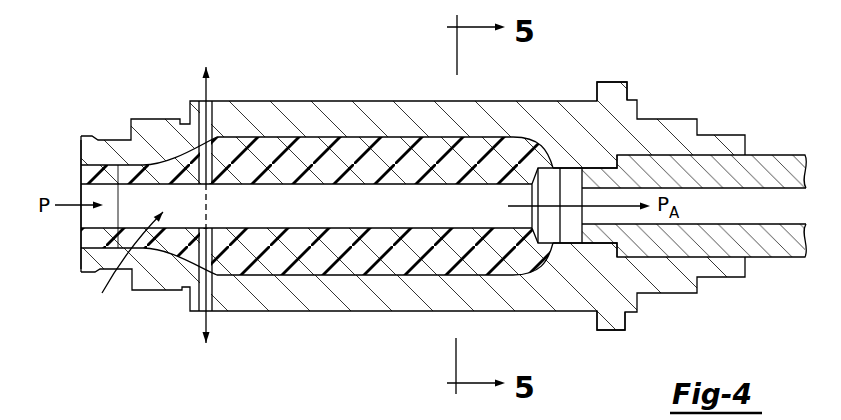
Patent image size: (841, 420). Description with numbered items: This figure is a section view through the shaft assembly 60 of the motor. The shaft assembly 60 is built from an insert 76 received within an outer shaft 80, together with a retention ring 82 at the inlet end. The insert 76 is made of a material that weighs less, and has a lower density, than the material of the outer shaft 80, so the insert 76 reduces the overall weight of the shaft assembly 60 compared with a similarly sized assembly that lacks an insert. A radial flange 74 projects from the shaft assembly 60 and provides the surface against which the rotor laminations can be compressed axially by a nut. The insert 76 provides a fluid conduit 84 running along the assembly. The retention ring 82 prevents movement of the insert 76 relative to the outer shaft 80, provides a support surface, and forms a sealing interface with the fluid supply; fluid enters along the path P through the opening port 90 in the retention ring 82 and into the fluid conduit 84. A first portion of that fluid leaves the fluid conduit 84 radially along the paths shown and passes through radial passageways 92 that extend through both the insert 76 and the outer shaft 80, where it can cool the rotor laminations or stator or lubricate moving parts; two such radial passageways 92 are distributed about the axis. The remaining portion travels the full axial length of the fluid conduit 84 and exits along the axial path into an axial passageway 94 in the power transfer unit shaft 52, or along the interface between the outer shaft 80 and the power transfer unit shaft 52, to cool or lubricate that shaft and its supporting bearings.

The power transfer unit shaft 52 is at (775, 155).
The shaft assembly 60 is at (623, 55).
The radial flange 74 is at (612, 83).
The insert 76 is at (262, 138).
The outer shaft 80 is at (300, 118).
The retention ring 82 is at (90, 242).
The fluid conduit 84 is at (126, 264).
The opening port 90 is at (93, 222).
The radial passageways 92 is at (204, 290).
The axial passageway 94 is at (747, 222).